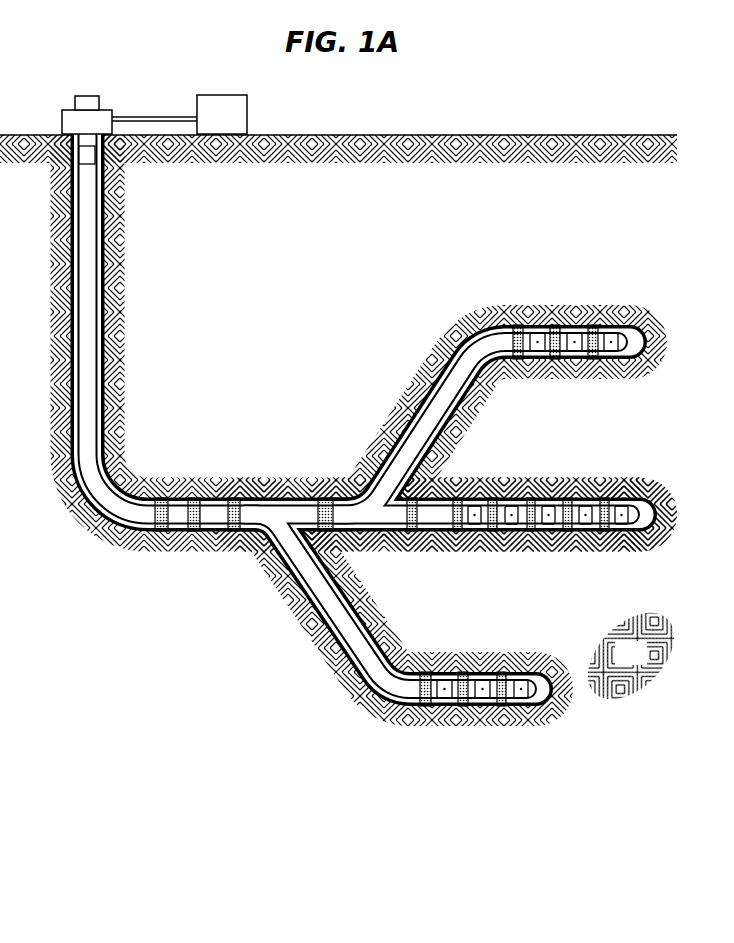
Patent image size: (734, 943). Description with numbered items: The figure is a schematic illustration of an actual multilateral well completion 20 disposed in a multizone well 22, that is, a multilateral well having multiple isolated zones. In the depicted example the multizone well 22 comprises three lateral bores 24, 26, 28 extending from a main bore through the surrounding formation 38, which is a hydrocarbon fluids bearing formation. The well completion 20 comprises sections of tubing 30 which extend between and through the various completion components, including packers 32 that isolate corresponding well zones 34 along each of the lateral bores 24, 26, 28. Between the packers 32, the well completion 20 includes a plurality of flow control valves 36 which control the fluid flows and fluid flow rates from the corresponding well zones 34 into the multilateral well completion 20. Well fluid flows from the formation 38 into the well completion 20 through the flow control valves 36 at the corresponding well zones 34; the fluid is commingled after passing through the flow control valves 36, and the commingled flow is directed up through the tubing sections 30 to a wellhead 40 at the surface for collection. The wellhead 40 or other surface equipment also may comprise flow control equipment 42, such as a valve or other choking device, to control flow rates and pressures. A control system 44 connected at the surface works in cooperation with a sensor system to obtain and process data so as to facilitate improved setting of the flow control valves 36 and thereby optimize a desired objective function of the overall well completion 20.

The well completion 20 is at (151, 546).
The multizone well 22 is at (50, 336).
The lateral bore 24 is at (541, 661).
The lateral bore 26 is at (641, 492).
The lateral bore 28 is at (632, 324).
The tubing 30 is at (92, 386).
The packer 32 is at (191, 497).
The well zone 34 is at (607, 362).
The flow control valve 36 is at (573, 333).
The formation 38 is at (643, 663).
The wellhead 40 is at (68, 110).
The flow control equipment 42 is at (86, 164).
The control system 44 is at (235, 127).